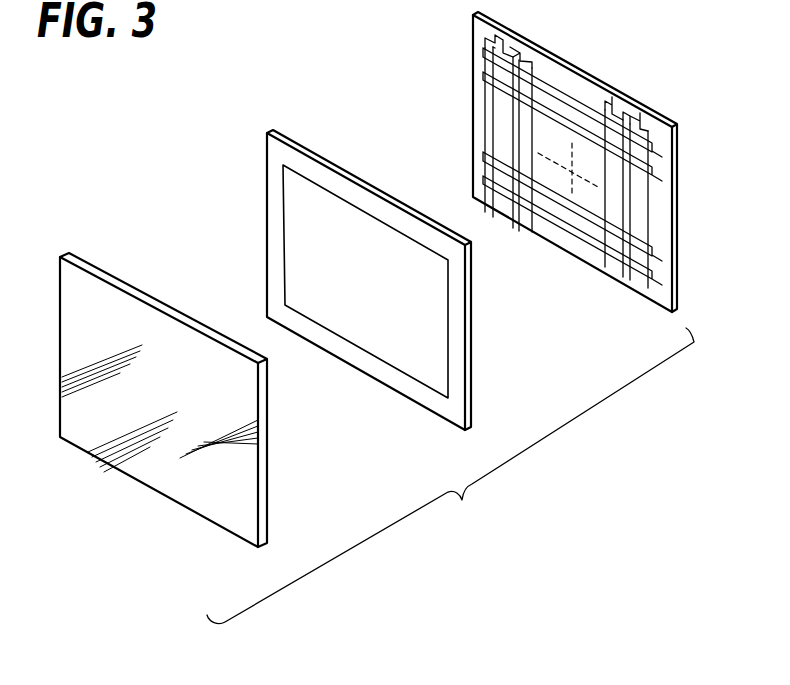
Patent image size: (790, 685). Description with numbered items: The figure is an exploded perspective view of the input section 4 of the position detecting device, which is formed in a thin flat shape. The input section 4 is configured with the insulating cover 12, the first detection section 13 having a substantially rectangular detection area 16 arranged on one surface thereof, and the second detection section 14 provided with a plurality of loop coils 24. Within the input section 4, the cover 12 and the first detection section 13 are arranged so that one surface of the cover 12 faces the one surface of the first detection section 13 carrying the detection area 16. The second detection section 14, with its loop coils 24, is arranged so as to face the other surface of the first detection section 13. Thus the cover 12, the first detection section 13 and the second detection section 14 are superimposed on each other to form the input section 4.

The input section 4 is at (450, 476).
The insulating cover 12 is at (240, 493).
The first detection section 13 is at (369, 303).
The detection area 16 is at (368, 212).
The second detection section 14 is at (575, 186).
The loop coils 24 is at (597, 110).